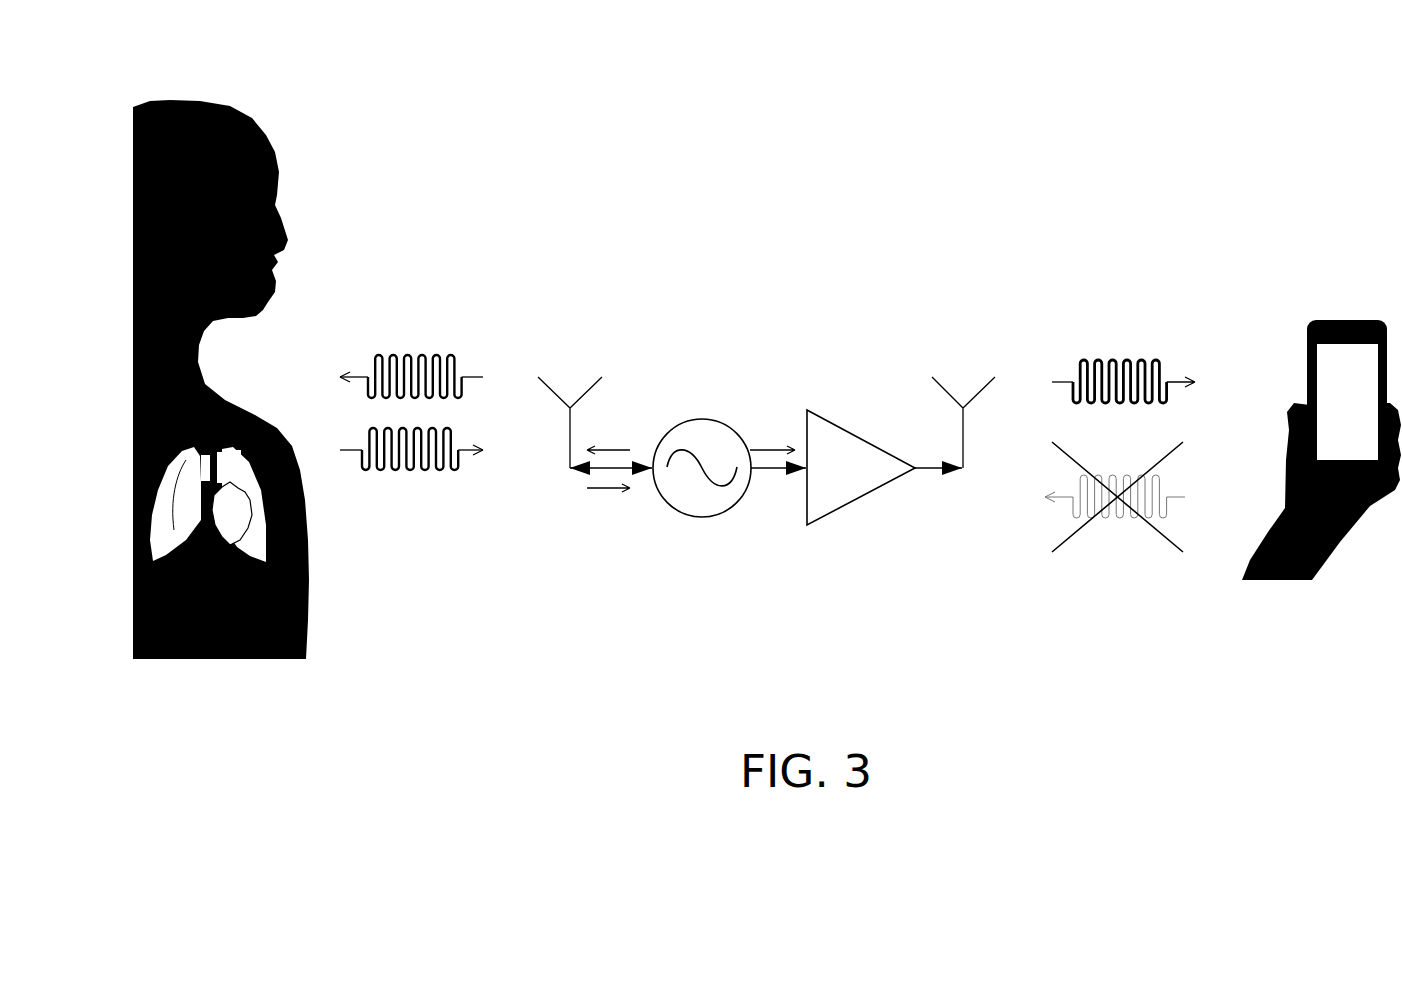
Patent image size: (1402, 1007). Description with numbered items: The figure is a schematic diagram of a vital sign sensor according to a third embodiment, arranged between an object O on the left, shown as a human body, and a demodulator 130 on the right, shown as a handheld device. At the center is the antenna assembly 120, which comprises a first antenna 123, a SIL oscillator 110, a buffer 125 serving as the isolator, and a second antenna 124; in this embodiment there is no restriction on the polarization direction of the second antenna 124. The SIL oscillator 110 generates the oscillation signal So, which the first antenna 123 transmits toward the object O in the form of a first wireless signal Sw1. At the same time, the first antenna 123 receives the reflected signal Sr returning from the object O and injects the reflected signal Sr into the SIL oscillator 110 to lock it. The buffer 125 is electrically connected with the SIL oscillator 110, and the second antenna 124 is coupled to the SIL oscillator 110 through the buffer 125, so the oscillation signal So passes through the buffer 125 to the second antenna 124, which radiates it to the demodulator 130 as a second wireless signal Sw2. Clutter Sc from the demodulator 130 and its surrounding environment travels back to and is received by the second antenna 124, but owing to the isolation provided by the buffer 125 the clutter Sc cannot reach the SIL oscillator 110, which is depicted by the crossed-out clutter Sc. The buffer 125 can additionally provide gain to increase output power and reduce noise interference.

The object O is at (272, 150).
The SIL oscillator 110 is at (700, 418).
The antenna assembly 120 is at (557, 255).
The first antenna 123 is at (553, 390).
The second antenna 124 is at (947, 392).
The buffer 125 is at (843, 425).
The demodulator 130 is at (1348, 318).
The first wireless signal Sw1 is at (412, 355).
The reflected signal Sr is at (425, 470).
The oscillation signal So is at (691, 434).
The second wireless signal Sw2 is at (1117, 360).
The clutter Sc is at (1110, 518).